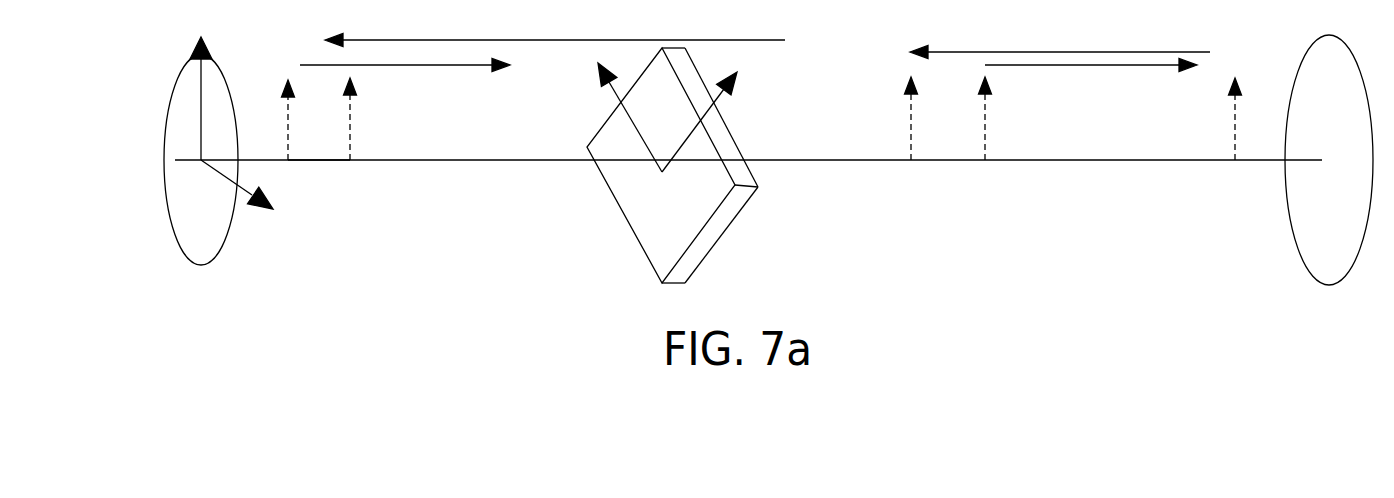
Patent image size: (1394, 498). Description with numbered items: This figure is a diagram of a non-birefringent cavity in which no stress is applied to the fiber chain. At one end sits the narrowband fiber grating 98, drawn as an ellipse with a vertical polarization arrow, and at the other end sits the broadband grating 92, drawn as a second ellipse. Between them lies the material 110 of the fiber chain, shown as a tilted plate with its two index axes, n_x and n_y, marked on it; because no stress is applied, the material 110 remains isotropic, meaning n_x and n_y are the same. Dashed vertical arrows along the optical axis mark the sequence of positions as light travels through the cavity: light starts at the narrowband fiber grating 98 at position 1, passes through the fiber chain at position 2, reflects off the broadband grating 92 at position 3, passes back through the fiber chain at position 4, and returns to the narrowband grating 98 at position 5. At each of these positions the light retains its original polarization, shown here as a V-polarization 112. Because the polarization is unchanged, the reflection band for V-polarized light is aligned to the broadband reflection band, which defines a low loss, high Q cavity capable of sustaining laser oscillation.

The narrowband fiber grating 98 is at (190, 188).
The V-polarization 112 is at (288, 138).
The material 110 is at (723, 223).
The broadband grating 92 is at (1310, 200).
The position at narrowband fiber grating end 1 is at (301, 111).
The position through fiber chain 2 is at (1001, 118).
The position at broadband grating reflection 3 is at (1251, 119).
The position back through fiber chain 4 is at (897, 118).
The position returning to narrowband grating 5 is at (359, 119).